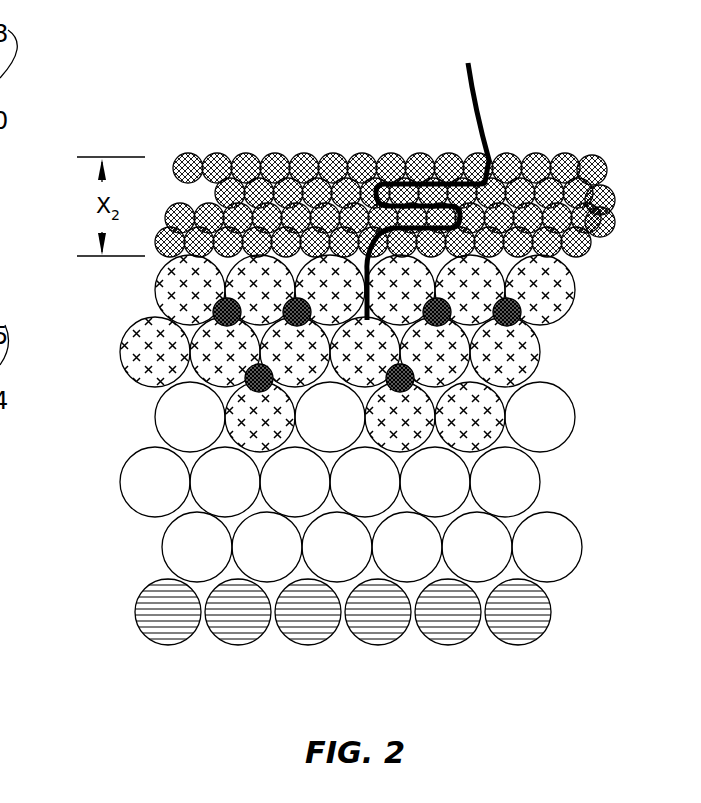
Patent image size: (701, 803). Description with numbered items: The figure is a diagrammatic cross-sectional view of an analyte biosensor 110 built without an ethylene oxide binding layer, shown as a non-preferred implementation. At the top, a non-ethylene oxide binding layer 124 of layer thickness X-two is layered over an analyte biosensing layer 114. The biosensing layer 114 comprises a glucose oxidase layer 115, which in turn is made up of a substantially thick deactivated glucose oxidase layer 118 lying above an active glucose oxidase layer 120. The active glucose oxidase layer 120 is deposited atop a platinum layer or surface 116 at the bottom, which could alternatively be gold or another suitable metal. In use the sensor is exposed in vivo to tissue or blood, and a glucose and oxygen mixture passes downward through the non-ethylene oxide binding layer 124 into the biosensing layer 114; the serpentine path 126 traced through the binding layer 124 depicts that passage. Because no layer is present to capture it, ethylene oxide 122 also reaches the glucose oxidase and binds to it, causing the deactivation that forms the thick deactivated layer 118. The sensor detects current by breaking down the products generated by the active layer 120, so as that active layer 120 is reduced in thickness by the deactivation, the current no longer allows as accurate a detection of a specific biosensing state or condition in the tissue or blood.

The analyte biosensor 110 is at (192, 68).
The analyte biosensing layer 114 is at (606, 259).
The glucose oxidase layer 115 is at (640, 390).
The platinum layer 116 is at (606, 586).
The deactivated glucose oxidase layer 118 is at (225, 398).
The active glucose oxidase layer 120 is at (163, 548).
The ethylene oxide 122 is at (523, 318).
The non-ethylene oxide binding layer 124 is at (604, 156).
The diffusion path 126 is at (483, 118).